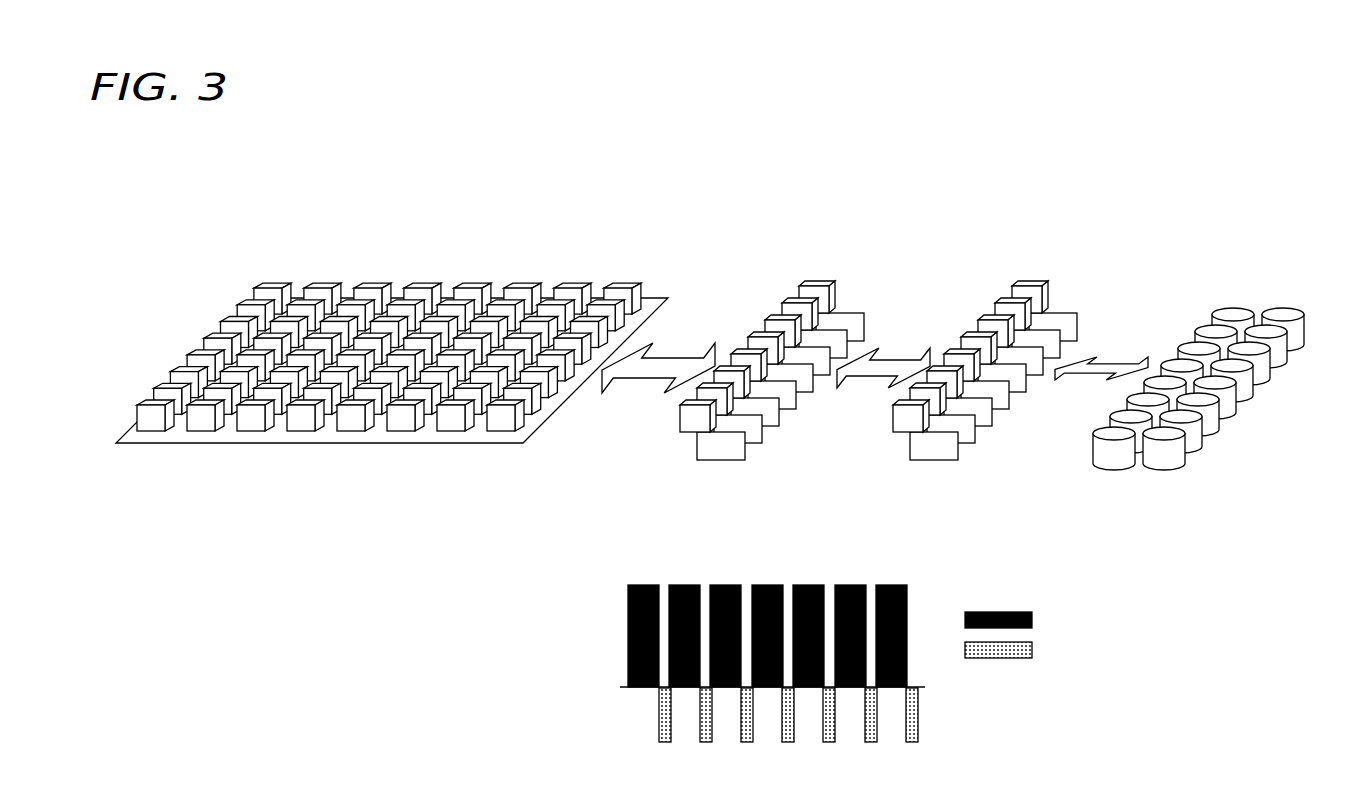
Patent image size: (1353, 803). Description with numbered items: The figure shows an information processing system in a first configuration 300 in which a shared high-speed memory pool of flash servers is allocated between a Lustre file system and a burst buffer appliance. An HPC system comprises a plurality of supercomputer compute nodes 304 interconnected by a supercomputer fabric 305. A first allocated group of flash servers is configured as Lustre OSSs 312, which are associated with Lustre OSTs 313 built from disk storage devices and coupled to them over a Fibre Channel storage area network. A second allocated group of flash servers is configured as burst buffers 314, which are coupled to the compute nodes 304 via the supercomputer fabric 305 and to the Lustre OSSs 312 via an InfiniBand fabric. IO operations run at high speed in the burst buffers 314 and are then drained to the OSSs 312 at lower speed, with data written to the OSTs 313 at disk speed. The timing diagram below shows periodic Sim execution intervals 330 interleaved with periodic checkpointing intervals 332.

The first configuration 300 is at (212, 190).
The compute nodes 304 is at (180, 350).
The supercomputer fabric 305 is at (488, 444).
The Lustre OSSs 312 is at (960, 468).
The Lustre OSTs 313 is at (1185, 480).
The burst buffers 314 is at (700, 468).
The periodic intervals for execution of the Sim application 330 is at (852, 585).
The periodic intervals for the checkpointing process 332 is at (877, 743).